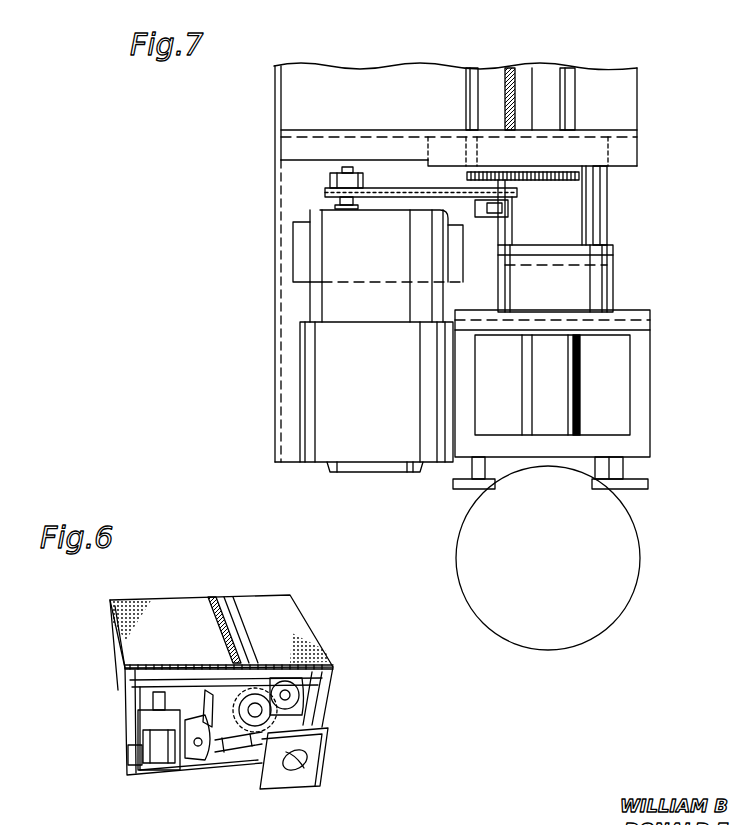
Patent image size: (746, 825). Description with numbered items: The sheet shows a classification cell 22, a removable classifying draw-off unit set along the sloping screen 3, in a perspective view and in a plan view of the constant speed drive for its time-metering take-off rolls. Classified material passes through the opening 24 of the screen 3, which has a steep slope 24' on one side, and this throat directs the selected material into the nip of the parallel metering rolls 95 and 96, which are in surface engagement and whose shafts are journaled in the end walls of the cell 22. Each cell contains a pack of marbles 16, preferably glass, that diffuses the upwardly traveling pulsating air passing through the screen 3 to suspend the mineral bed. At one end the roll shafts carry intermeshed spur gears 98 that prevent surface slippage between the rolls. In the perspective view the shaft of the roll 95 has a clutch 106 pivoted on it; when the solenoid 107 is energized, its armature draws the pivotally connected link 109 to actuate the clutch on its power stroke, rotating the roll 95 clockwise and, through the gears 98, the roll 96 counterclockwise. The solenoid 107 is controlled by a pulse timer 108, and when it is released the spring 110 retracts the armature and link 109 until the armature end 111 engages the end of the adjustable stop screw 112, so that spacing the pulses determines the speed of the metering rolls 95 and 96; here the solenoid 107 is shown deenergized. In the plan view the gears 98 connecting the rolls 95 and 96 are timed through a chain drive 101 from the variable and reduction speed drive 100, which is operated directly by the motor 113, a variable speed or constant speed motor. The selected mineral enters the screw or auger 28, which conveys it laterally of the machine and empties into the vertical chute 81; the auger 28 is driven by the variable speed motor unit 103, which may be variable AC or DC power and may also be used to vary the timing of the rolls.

In FIG. 7, the classifier cell 22 is at (274, 103).
In FIG. 6, the classifier cell 22 is at (117, 693).
In FIG. 7, the metering roll 95 is at (484, 103).
In FIG. 7, the metering roll 96 is at (547, 108).
In FIG. 7, the chain 101 is at (375, 188).
In FIG. 7, the spur gears 98 is at (517, 182).
In FIG. 6, the spur gears 98 is at (262, 688).
In FIG. 7, the variable speed drive unit 100 is at (306, 245).
In FIG. 7, the motor 113 is at (318, 391).
In FIG. 7, the auger 28 is at (551, 347).
In FIG. 6, the auger 28 is at (380, 756).
In FIG. 7, the vertical chute 81 is at (612, 372).
In FIG. 7, the variable speed motor unit 103 is at (560, 527).
In FIG. 6, the screen 3 is at (164, 608).
In FIG. 6, the steep slope 24' is at (241, 610).
In FIG. 6, the opening 24 is at (269, 613).
In FIG. 6, the pack of marbles 16 is at (210, 665).
In FIG. 6, the pulse timer 108 is at (158, 692).
In FIG. 6, the adjustable stop screw 112 is at (190, 722).
In FIG. 6, the solenoid 107 is at (140, 752).
In FIG. 6, the link 109 is at (210, 708).
In FIG. 6, the spring 110 is at (246, 752).
In FIG. 6, the armature end 111 is at (200, 772).
In FIG. 6, the clutch 106 is at (292, 710).